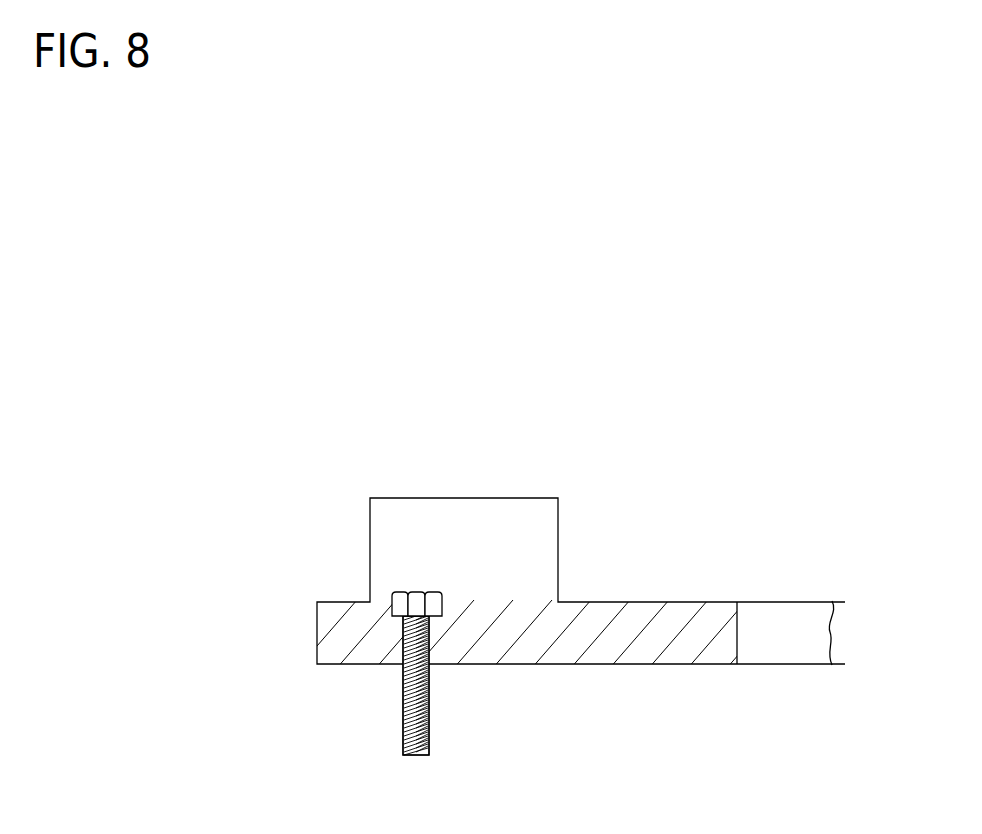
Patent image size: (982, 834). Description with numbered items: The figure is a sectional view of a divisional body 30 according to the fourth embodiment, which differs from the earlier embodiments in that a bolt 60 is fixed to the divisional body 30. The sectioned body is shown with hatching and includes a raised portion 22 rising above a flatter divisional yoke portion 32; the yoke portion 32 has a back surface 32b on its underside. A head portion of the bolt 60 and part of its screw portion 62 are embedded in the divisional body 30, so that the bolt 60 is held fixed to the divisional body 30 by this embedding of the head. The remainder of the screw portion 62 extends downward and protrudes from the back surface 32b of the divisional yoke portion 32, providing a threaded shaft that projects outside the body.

The protruding portion 22 is at (482, 552).
The divisional body 30 is at (443, 599).
The divisional yoke portion 32 is at (709, 632).
The back surface 32b is at (594, 665).
The bolt 60 is at (359, 642).
The screw portion 62 is at (402, 717).